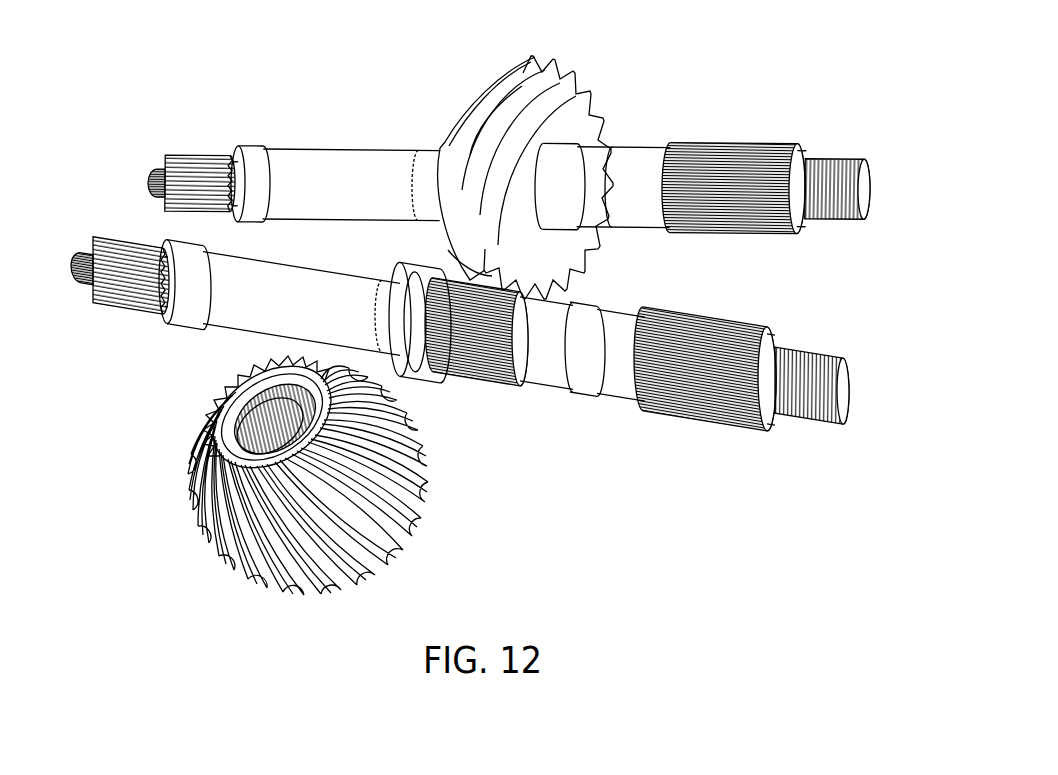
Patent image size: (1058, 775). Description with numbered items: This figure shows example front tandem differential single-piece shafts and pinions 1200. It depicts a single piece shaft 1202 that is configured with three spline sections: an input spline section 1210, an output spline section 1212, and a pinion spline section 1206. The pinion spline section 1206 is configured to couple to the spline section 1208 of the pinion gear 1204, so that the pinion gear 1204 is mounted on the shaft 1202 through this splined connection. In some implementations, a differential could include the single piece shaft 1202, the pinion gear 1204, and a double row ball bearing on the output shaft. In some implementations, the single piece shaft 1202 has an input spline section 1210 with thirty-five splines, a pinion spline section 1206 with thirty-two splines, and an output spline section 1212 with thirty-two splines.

The transmission shaft assembly 1200 is at (293, 146).
The single piece shaft 1202 is at (378, 145).
The pinion gear 1204 is at (612, 88).
The pinion spline section 1206 is at (486, 388).
The spline section of the pinion gear 1208 is at (215, 456).
The input spline section 1210 is at (770, 326).
The output spline section 1212 is at (127, 245).